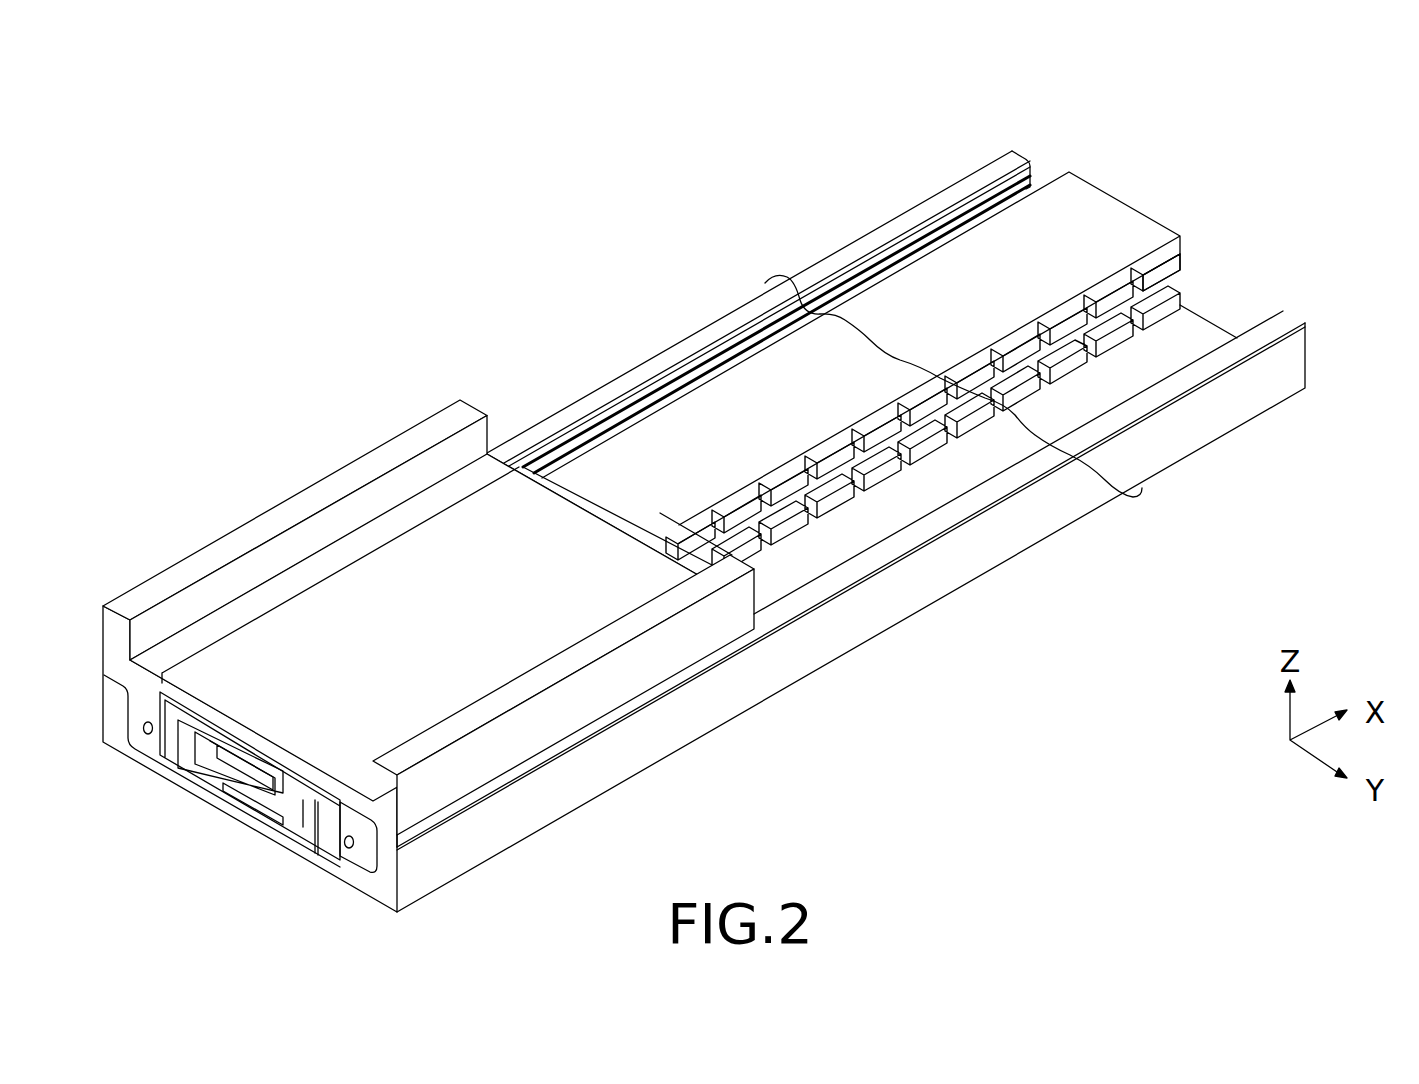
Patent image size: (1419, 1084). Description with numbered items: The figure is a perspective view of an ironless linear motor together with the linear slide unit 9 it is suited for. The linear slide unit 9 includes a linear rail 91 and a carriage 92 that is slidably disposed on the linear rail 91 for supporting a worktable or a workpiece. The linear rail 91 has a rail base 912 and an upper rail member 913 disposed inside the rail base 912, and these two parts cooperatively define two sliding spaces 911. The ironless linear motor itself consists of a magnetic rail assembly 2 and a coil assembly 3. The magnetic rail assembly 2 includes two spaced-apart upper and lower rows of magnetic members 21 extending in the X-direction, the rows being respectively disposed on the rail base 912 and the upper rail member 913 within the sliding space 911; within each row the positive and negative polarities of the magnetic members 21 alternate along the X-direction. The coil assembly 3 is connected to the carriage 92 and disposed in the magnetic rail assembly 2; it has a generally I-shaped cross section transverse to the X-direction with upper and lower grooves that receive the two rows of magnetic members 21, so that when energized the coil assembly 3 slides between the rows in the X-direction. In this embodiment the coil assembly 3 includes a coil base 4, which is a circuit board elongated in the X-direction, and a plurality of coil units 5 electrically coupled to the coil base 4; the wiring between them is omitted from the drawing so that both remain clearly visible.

The magnetic rail assembly 2 is at (1182, 259).
The coil assembly 3 is at (250, 825).
The coil base 4 is at (317, 846).
The coil units 5 is at (244, 808).
The linear slide unit 9 is at (1022, 153).
The magnetic members 21 is at (1100, 293).
The linear rail 91 is at (1306, 355).
The carriage 92 is at (221, 532).
The sliding spaces 911 is at (1173, 343).
The rail base 912 is at (113, 737).
The upper rail member 913 is at (1083, 198).